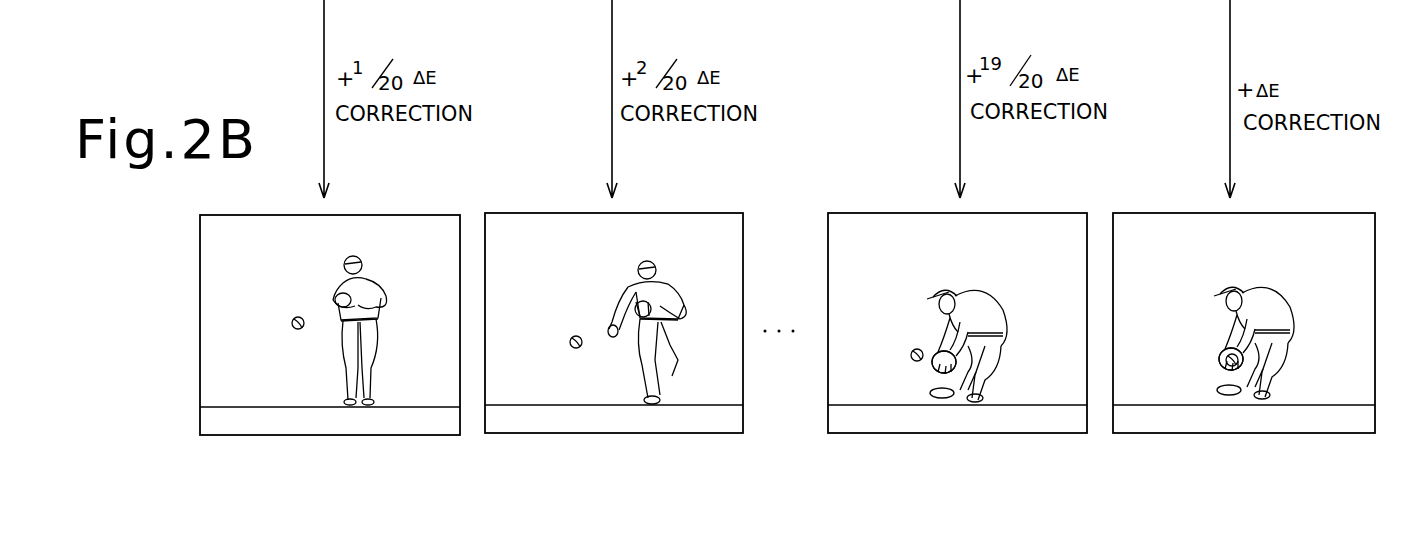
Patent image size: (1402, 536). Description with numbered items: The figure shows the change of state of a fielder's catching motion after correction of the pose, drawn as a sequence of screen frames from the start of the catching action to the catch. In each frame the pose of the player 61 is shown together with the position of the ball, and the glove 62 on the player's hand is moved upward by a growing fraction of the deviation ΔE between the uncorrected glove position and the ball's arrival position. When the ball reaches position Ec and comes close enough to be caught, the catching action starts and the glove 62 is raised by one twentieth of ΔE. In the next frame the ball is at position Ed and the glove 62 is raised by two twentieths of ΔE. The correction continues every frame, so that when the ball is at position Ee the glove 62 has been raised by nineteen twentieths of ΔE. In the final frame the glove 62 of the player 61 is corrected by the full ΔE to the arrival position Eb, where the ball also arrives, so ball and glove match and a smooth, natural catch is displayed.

The player 61 is at (378, 272).
The glove 62 is at (343, 278).
The arrival position of the ball Eb is at (1298, 333).
The position of the ball Ec is at (296, 316).
The position of the ball Ed is at (573, 335).
The position of the ball Ee is at (911, 349).